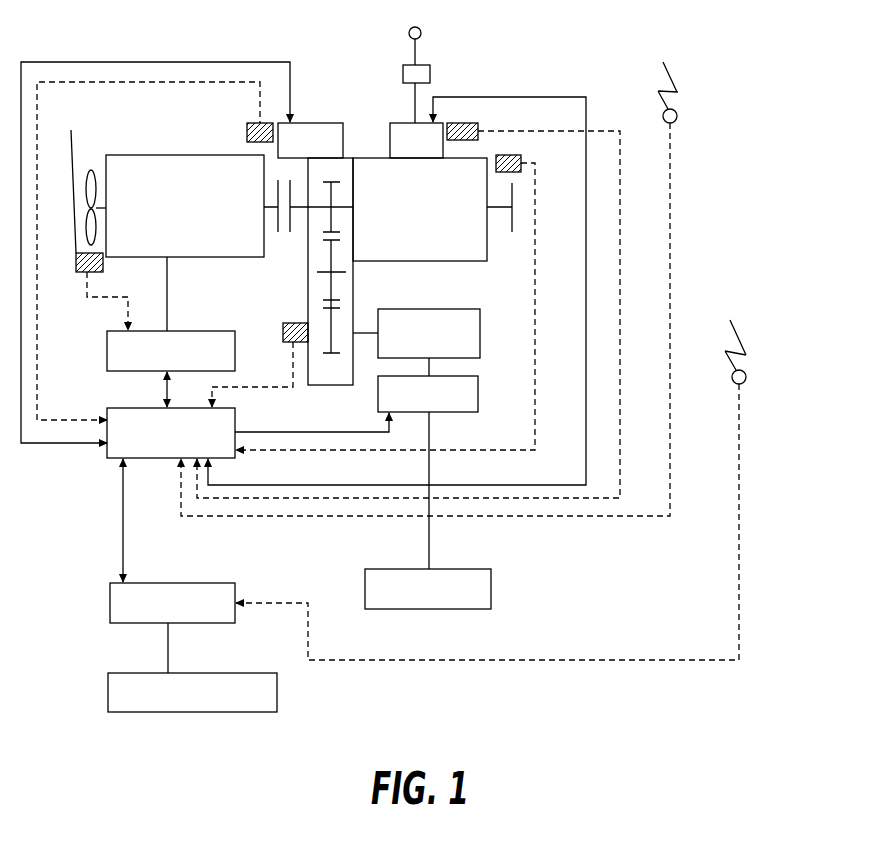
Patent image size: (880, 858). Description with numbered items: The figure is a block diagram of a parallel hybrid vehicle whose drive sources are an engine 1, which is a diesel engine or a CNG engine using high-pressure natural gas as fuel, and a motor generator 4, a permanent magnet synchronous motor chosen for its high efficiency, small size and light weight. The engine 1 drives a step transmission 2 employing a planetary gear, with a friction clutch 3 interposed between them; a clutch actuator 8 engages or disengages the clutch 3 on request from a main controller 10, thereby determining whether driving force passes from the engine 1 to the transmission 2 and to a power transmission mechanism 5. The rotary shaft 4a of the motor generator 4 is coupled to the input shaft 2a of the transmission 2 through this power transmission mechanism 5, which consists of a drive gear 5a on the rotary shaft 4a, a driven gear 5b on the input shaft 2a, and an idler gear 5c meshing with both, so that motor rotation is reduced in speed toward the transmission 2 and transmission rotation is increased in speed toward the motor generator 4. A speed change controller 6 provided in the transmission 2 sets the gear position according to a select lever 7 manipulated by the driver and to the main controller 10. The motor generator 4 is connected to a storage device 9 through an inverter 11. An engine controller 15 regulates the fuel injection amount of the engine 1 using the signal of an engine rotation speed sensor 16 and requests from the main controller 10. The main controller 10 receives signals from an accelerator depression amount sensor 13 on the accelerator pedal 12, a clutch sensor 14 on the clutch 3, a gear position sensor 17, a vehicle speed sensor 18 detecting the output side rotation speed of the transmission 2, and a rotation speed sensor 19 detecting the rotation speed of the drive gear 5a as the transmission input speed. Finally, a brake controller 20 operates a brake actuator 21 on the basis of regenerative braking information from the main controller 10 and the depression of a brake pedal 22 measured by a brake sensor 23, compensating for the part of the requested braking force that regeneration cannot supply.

The engine 1 is at (172, 156).
The step transmission 2 is at (472, 253).
The input shaft 2a is at (345, 205).
The friction clutch 3 is at (285, 228).
The motor generator 4 is at (480, 333).
The rotary shaft 4a is at (366, 338).
The power transmission mechanism 5 is at (356, 297).
The drive gear 5a is at (324, 353).
The driven gear 5b is at (338, 181).
The idler gear 5c is at (332, 253).
The speed change controller 6 is at (397, 123).
The select lever 7 is at (424, 65).
The clutch actuator 8 is at (312, 123).
The storage device 9 is at (491, 589).
The main controller 10 is at (107, 460).
The inverter 11 is at (478, 392).
The accelerator pedal 12 is at (663, 62).
The accelerator depression amount sensor 13 is at (679, 109).
The clutch sensor 14 is at (247, 133).
The engine controller 15 is at (235, 354).
The engine rotation speed sensor 16 is at (82, 189).
The gear position sensor 17 is at (462, 123).
The vehicle speed sensor 18 is at (508, 155).
The rotation speed sensor 19 is at (281, 324).
The brake controller 20 is at (115, 617).
The brake actuator 21 is at (277, 697).
The brake pedal 22 is at (735, 329).
The brake sensor 23 is at (746, 377).